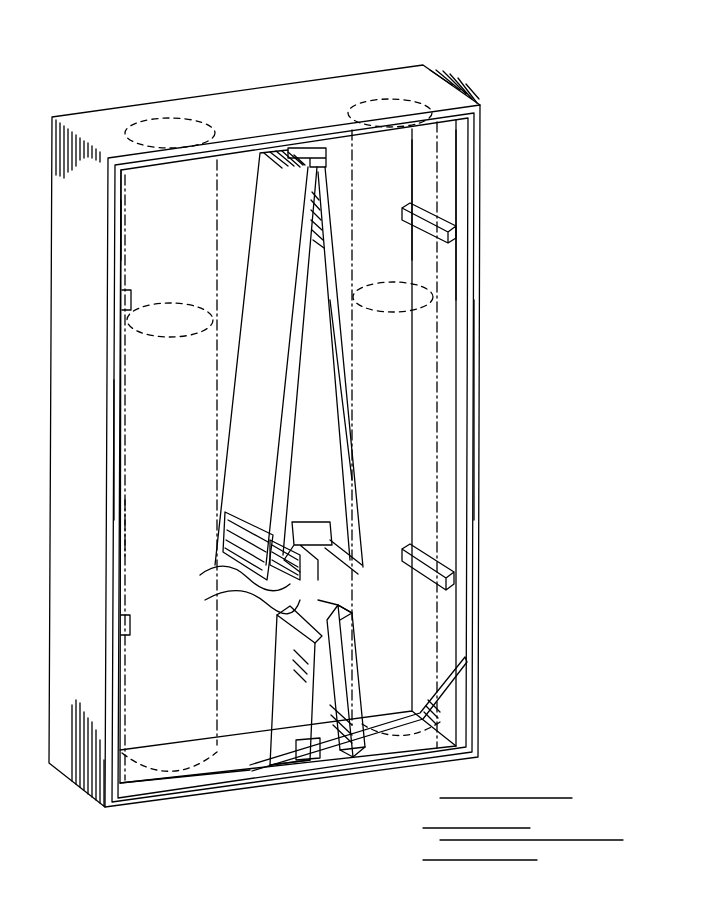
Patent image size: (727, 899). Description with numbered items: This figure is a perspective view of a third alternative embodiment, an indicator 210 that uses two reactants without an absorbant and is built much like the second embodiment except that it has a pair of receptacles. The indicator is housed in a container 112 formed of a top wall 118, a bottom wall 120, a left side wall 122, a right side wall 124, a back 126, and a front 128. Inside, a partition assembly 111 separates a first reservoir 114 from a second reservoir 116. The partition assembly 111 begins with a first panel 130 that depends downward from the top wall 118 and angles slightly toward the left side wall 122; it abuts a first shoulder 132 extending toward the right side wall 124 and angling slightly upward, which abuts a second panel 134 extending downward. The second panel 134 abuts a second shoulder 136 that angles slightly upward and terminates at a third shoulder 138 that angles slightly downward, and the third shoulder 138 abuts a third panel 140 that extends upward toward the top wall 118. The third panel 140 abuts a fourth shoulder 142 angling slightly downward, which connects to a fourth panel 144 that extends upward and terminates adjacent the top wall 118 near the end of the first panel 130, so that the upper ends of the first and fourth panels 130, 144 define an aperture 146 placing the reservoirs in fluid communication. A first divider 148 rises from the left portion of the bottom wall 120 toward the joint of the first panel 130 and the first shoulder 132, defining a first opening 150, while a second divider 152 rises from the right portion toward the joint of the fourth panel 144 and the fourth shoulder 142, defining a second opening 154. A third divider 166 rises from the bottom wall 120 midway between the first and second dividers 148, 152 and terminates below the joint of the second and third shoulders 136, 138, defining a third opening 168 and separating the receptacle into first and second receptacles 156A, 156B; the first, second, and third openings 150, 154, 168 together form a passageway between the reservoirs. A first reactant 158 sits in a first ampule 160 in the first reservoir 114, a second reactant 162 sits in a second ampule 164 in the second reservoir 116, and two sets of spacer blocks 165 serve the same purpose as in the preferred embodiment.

The indicator 210 is at (280, 54).
The container 112 is at (220, 76).
The aperture 146 is at (333, 140).
The top wall 118 is at (345, 118).
The second reservoir 116 is at (450, 158).
The back 126 is at (391, 199).
The second reactant 162 is at (413, 224).
The first reservoir 114 is at (142, 210).
The first reactant 158 is at (152, 287).
The first panel 130 is at (294, 363).
The second ampule 164 is at (394, 358).
The partition assembly 111 is at (246, 386).
The fourth panel 144 is at (350, 455).
The left side wall 122 is at (112, 450).
The first ampule 160 is at (150, 479).
The second panel 134 is at (262, 522).
The fourth shoulder 142 is at (336, 556).
The right side wall 124 is at (478, 426).
The first shoulder 132 is at (222, 570).
The second shoulder 136 is at (232, 595).
The third panel 140 is at (353, 561).
The third shoulder 138 is at (348, 586).
The spacer blocks 165 is at (118, 620).
The first opening 150 is at (278, 631).
The first divider 148 is at (272, 708).
The third opening 168 is at (333, 617).
The second opening 154 is at (364, 622).
The second divider 152 is at (363, 680).
The third divider 166 is at (296, 760).
The first receptacle 156A is at (290, 765).
The second receptacle 156B is at (340, 748).
The front 128 is at (452, 717).
The bottom wall 120 is at (220, 762).